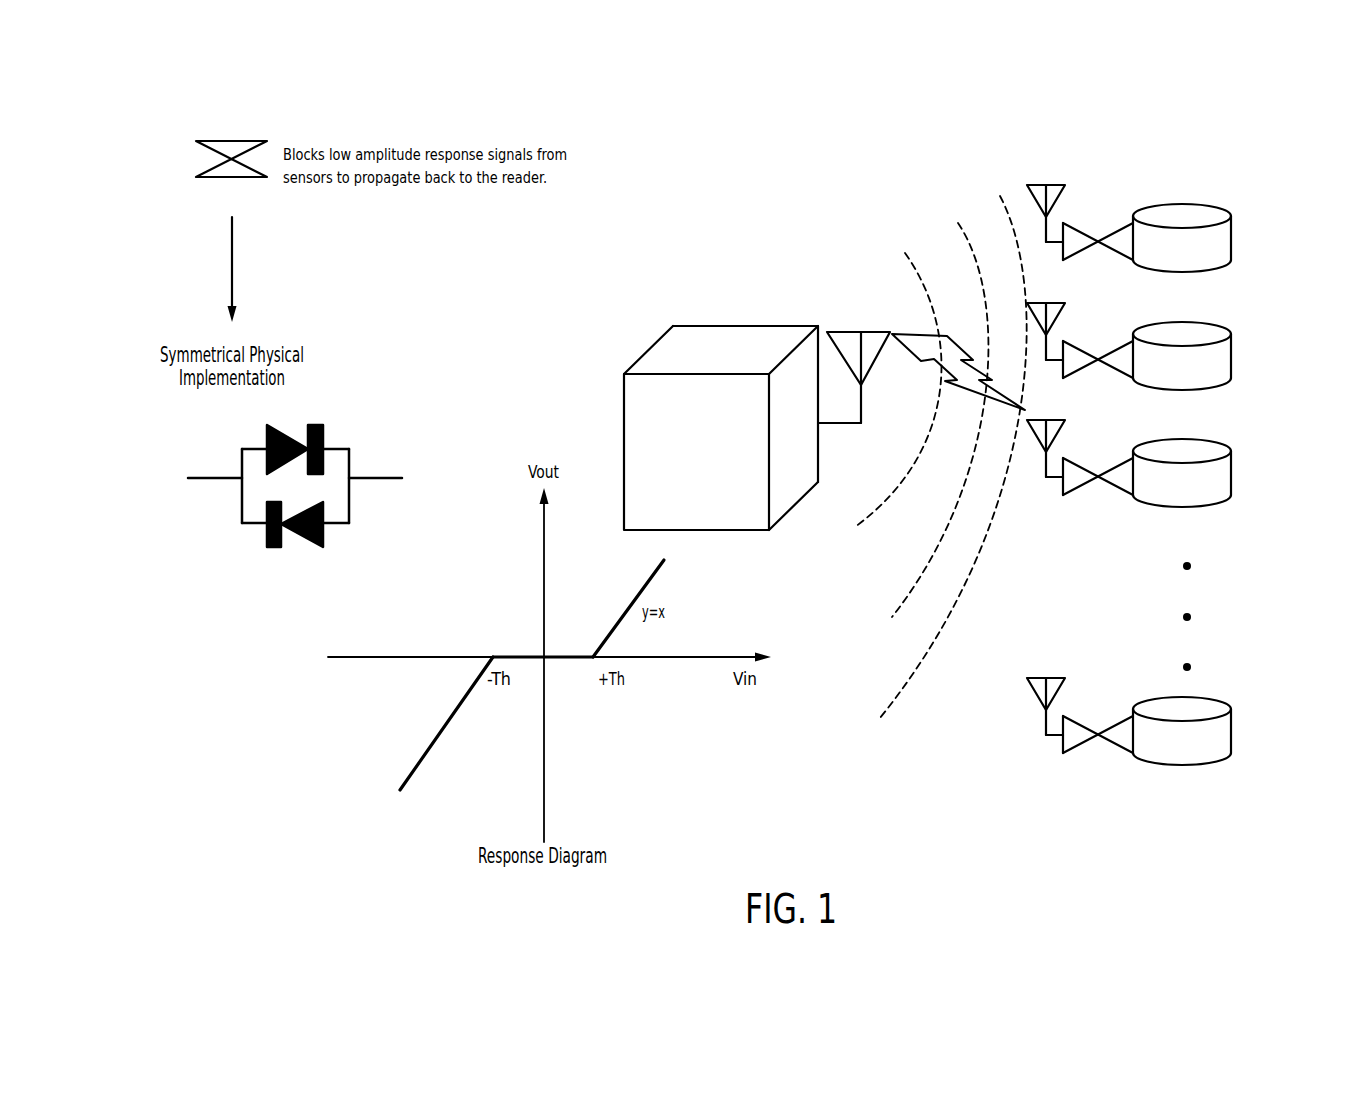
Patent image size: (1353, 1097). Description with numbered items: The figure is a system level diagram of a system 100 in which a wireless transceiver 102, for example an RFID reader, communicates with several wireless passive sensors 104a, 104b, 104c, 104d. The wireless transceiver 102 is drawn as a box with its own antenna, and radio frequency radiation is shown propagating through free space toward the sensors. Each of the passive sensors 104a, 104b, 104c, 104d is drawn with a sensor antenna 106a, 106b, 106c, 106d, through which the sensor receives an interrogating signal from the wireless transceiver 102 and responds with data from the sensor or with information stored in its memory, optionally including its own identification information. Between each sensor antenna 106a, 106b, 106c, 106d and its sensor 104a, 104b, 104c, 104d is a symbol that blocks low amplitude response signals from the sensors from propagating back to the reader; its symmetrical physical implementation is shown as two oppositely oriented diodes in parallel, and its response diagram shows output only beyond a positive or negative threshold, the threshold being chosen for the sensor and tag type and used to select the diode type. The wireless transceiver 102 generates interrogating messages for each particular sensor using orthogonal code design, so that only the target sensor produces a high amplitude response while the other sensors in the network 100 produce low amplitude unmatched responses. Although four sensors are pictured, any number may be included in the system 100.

The system 100 is at (1170, 165).
The wireless transceiver 102 is at (663, 335).
The wireless passive sensor 104a is at (1231, 240).
The wireless passive sensor 104b is at (1180, 356).
The wireless passive sensor 104c is at (1180, 473).
The wireless passive sensor 104d is at (1180, 731).
The sensor antenna 106a is at (1060, 198).
The sensor antenna 106b is at (1076, 324).
The sensor antenna 106c is at (1076, 441).
The sensor antenna 106d is at (1076, 699).